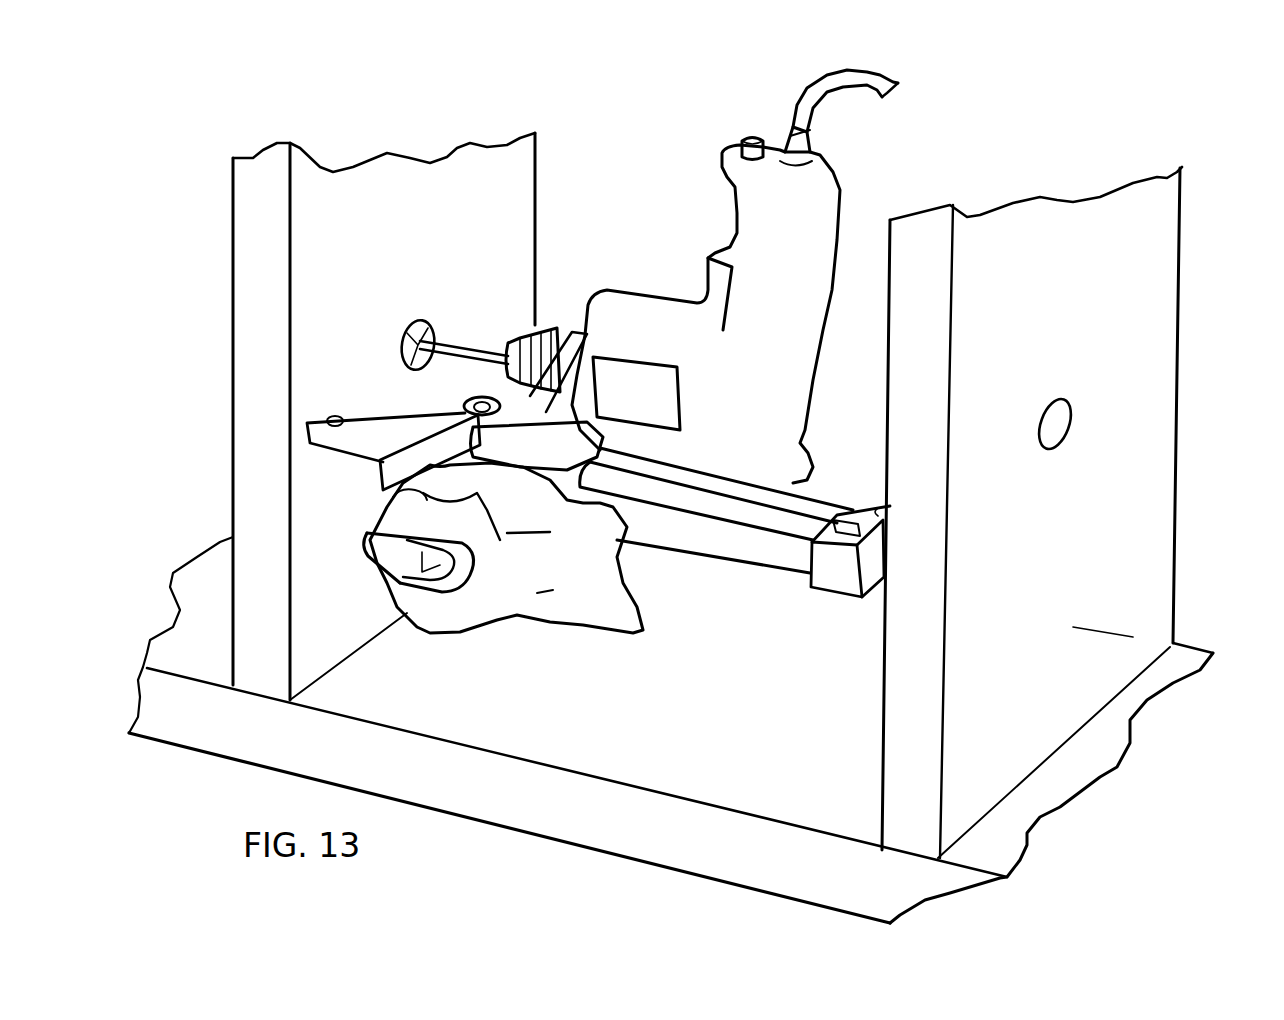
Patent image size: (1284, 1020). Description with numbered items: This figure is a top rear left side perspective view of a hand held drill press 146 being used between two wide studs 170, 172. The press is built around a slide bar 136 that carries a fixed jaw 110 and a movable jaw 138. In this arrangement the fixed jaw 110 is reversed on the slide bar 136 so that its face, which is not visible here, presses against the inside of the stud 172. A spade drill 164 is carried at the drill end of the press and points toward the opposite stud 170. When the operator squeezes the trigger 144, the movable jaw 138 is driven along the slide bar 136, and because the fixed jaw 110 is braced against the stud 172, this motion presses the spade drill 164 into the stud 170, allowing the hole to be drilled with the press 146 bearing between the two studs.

The fixed jaw 110 is at (838, 575).
The slide bar 136 is at (753, 507).
The movable jaw 138 is at (545, 398).
The trigger 144 is at (377, 563).
The hand held drill press 146 is at (998, 83).
The spade drill 164 is at (458, 343).
The stud 170 is at (253, 310).
The stud 172 is at (1155, 328).